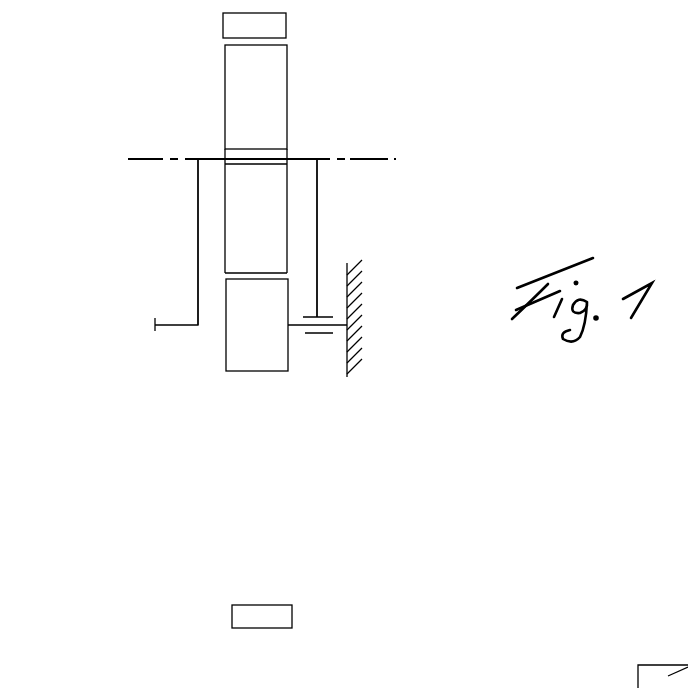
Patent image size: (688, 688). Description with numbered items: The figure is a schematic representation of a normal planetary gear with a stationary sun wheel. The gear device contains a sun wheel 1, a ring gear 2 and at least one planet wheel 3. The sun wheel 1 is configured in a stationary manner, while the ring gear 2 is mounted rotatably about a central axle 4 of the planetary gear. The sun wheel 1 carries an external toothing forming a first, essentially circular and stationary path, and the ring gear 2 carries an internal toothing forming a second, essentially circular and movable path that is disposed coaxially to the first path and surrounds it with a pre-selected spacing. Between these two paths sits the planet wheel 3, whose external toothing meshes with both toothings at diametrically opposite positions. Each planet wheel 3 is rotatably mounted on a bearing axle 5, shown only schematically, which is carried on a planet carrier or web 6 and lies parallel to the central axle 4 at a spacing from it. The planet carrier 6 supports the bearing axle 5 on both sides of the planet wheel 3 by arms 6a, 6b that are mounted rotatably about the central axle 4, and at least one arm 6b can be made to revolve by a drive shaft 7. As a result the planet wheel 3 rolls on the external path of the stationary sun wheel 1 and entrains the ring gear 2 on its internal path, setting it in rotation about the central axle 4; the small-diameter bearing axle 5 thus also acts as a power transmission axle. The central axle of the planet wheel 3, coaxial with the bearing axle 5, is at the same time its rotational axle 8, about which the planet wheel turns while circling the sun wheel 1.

The sun wheel 1 is at (245, 357).
The ring gear 2 is at (258, 25).
The planet wheel 3 is at (260, 75).
The central axle 4 is at (299, 328).
The bearing axle 5 is at (207, 159).
The planet carrier 6 is at (318, 230).
The arm 6a is at (318, 181).
The arm 6b is at (195, 192).
The drive shaft 7 is at (170, 327).
The rotational axle 8 is at (347, 159).